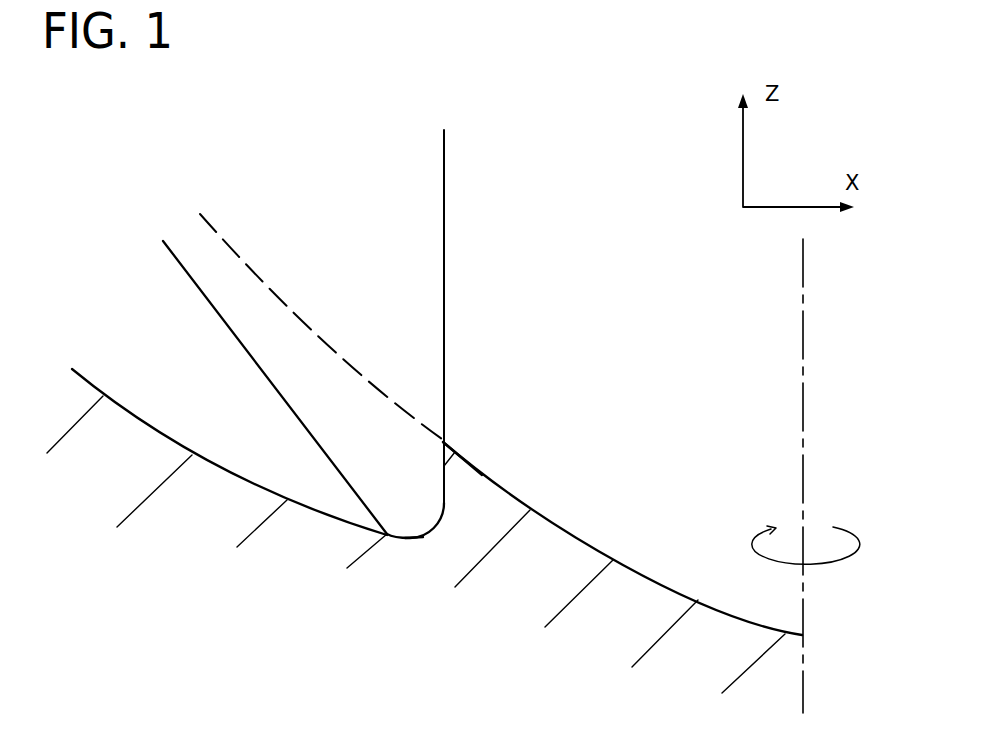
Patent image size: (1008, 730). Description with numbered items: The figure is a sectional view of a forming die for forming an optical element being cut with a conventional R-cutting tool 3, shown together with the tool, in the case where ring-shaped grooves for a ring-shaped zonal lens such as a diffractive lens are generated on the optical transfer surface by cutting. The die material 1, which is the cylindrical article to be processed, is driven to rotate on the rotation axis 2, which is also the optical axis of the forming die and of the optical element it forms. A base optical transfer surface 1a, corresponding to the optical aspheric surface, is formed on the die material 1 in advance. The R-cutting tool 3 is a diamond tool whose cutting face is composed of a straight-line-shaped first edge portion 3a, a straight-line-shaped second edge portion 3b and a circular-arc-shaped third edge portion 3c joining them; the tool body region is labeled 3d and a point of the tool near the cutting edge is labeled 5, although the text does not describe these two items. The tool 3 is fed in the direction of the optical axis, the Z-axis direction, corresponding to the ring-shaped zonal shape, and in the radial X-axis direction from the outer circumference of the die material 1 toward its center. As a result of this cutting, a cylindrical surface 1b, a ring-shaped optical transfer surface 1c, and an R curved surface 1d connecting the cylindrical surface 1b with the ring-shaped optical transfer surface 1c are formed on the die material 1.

The die material 1 is at (424, 526).
The base optical transfer surface 1a is at (594, 542).
The cylindrical surface 1b is at (443, 477).
The ring-shaped optical transfer surface 1c is at (248, 481).
The R curved surface 1d is at (421, 536).
The rotation axis 2 is at (803, 314).
The R-cutting tool 3 is at (320, 376).
The first edge portion 3a is at (445, 255).
The second edge portion 3b is at (205, 297).
The third edge portion 3c is at (423, 537).
The tool body 3d is at (371, 240).
The cutting point 5 is at (445, 497).